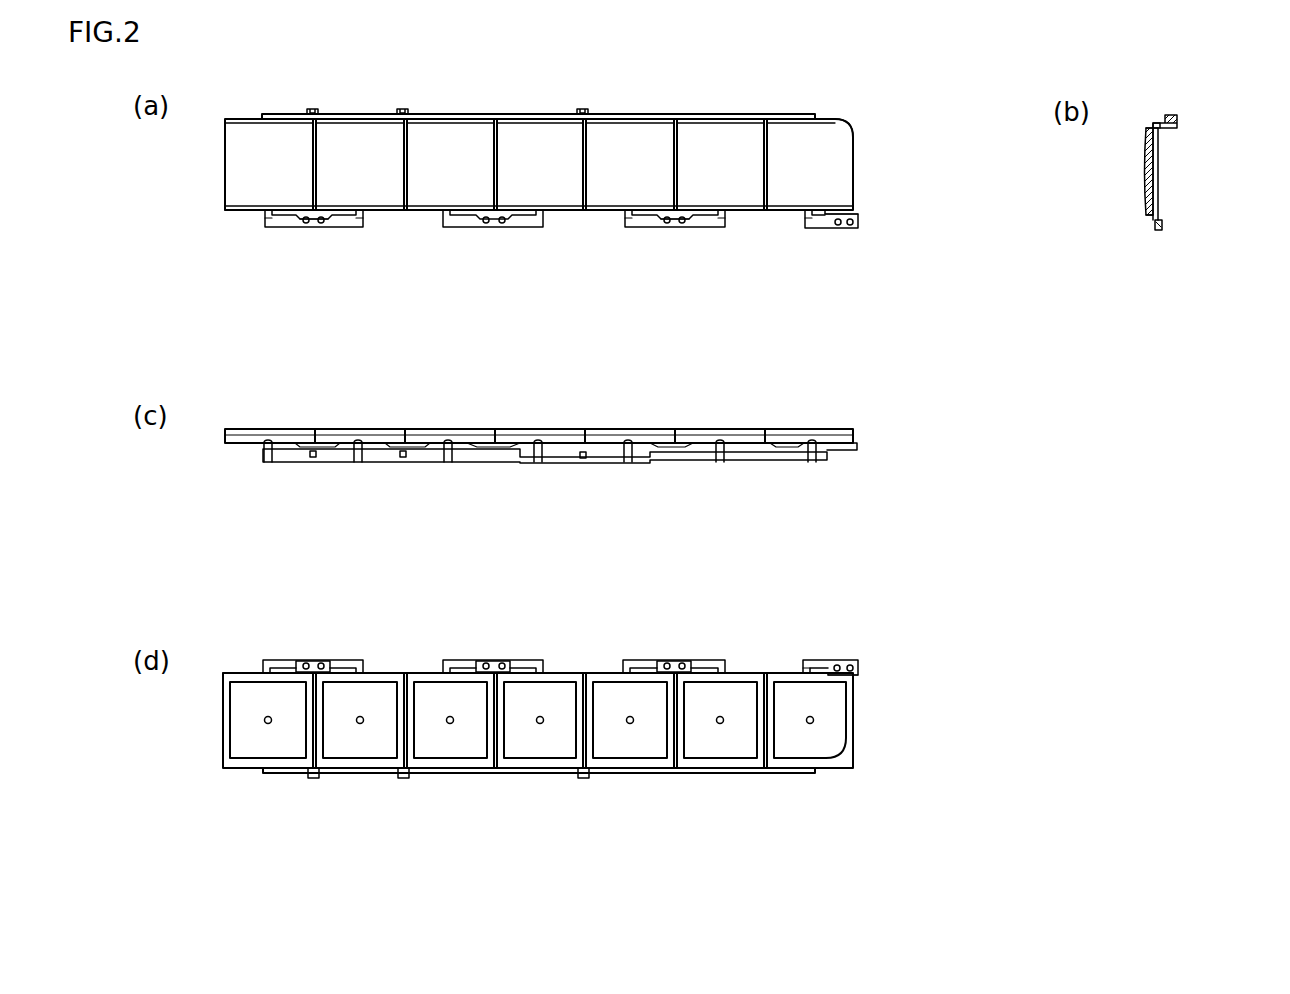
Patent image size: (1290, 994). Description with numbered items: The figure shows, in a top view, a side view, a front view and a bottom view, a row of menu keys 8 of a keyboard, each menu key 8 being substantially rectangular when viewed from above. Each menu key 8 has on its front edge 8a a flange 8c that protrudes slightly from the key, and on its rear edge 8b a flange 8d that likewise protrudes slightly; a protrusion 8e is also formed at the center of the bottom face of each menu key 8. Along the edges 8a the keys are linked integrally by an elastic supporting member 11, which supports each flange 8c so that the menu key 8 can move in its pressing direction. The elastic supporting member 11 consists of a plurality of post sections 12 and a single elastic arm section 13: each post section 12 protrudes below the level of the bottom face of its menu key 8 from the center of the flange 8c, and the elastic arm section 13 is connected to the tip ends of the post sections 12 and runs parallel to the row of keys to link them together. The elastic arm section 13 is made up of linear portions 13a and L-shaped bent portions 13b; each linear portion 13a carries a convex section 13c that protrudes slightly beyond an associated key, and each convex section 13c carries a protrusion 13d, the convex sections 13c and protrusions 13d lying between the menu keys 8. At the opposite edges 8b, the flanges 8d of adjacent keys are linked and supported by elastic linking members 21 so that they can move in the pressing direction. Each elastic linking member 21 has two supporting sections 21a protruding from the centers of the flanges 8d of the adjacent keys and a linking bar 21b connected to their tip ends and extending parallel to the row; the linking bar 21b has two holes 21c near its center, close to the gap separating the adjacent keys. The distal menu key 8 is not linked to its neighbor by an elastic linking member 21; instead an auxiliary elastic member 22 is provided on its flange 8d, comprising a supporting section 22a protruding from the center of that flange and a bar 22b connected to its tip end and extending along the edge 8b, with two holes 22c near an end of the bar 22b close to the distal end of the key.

The menu key 8 is at (344, 149).
The edge 8a is at (240, 118).
The edge 8b is at (232, 212).
The flange 8c is at (565, 115).
The flange 8d is at (432, 212).
The protrusion 8e is at (450, 724).
The elastic supporting member 11 is at (731, 105).
The post section 12 is at (268, 463).
The elastic arm section 13 is at (608, 463).
The linear portion 13a is at (340, 462).
The L-shaped bent portion 13b is at (510, 460).
The convex section 13c is at (318, 114).
The protrusion 13d is at (313, 108).
The elastic linking member 21 is at (462, 239).
The supporting section 21a is at (265, 226).
The linking bar 21b is at (285, 226).
The hole 21c is at (321, 224).
The auxiliary elastic member 22 is at (859, 236).
The supporting section 22a is at (808, 228).
The bar 22b is at (830, 228).
The hole 22c is at (850, 226).